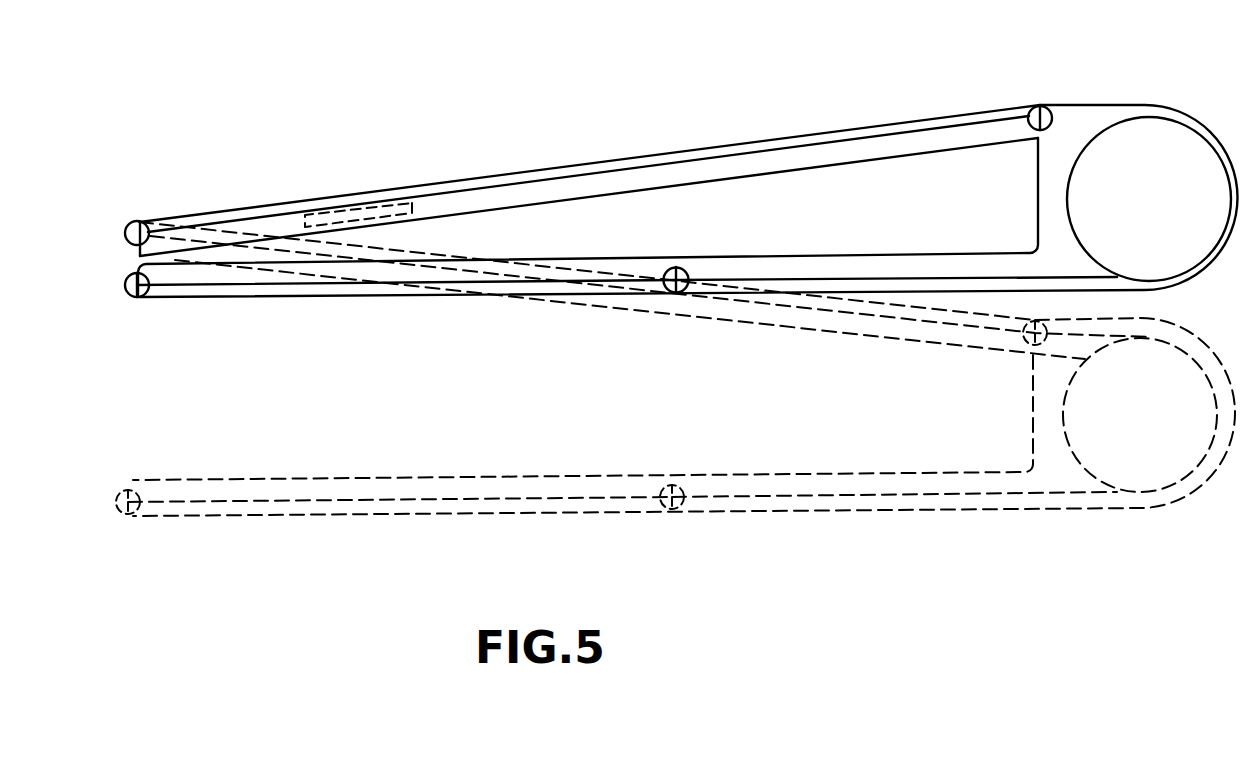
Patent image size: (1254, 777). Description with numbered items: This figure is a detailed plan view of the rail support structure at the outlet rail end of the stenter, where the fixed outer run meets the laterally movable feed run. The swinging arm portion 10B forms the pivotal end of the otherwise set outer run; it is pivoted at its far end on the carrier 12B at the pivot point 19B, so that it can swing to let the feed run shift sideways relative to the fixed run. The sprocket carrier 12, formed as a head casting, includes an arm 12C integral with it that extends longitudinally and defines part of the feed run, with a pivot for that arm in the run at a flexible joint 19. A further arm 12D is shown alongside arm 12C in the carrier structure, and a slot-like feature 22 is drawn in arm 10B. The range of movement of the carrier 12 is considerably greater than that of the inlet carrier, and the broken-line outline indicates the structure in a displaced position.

The swinging arm portion 10B is at (767, 141).
The sprocket carrier 12 is at (1100, 273).
The carrier 12B is at (893, 487).
The longitudinal arm 12C is at (932, 262).
The lower link arm 12D is at (412, 288).
The flexible joint 19 is at (128, 228).
The pivot point 19B is at (1033, 110).
The slot 22 is at (360, 207).